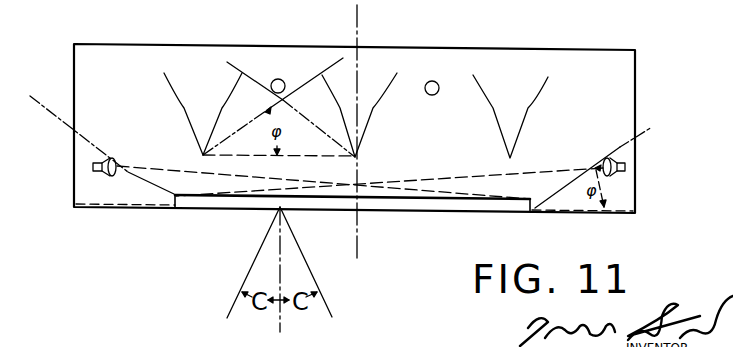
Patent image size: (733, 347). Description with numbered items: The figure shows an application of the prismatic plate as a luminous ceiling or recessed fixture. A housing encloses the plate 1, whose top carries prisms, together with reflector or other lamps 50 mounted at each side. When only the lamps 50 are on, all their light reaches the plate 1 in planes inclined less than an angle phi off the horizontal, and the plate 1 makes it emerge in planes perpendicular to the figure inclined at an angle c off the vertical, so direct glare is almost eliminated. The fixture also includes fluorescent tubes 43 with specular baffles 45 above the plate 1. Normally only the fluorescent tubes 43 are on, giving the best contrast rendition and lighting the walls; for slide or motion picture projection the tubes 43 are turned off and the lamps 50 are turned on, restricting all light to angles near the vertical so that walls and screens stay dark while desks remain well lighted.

The plate 1 is at (387, 201).
The fluorescent tubes 43 is at (287, 60).
The specular baffles 45 is at (226, 90).
The reflector lamps 50 is at (100, 160).